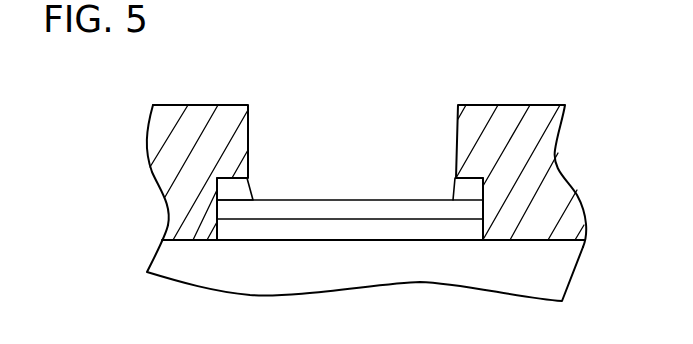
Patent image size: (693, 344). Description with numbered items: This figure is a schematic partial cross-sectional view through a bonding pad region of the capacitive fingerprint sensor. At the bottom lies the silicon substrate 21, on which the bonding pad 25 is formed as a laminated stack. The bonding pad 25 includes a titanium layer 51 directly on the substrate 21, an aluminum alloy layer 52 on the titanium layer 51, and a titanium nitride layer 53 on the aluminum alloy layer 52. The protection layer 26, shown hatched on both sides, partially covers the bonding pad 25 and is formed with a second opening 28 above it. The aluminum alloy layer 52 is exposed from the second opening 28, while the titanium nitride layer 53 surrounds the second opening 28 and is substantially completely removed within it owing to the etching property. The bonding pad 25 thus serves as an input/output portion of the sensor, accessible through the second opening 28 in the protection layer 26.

The silicon substrate 21 is at (567, 260).
The bonding pad 25 is at (270, 208).
The protection layer 26 is at (573, 203).
The second opening 28 is at (347, 153).
The titanium layer 51 is at (225, 230).
The aluminum alloy layer 52 is at (230, 207).
The titanium nitride layer 53 is at (225, 181).